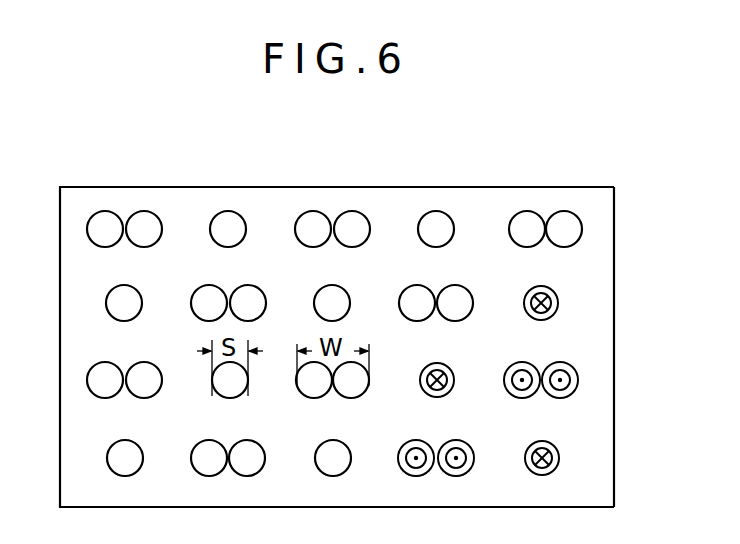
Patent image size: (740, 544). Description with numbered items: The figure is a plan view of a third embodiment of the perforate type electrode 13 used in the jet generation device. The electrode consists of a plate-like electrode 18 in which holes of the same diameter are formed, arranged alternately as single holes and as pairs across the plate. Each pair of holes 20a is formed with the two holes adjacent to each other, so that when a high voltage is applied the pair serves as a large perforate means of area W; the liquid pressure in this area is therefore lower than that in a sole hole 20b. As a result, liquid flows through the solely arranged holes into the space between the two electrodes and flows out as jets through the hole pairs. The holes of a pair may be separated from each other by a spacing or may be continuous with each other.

The perforate type electrode 13 is at (327, 184).
The plate-like electrode 18 is at (600, 240).
The pair of holes 20a is at (525, 228).
The sole hole 20b is at (436, 213).